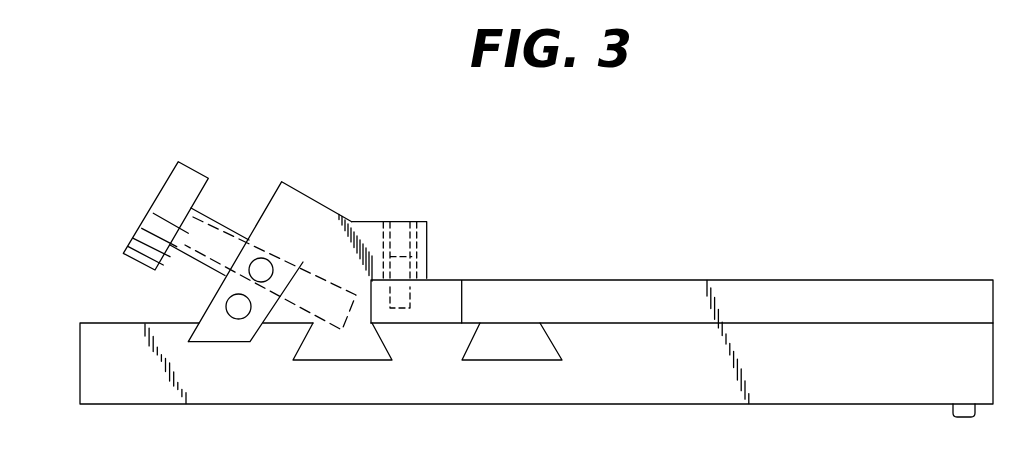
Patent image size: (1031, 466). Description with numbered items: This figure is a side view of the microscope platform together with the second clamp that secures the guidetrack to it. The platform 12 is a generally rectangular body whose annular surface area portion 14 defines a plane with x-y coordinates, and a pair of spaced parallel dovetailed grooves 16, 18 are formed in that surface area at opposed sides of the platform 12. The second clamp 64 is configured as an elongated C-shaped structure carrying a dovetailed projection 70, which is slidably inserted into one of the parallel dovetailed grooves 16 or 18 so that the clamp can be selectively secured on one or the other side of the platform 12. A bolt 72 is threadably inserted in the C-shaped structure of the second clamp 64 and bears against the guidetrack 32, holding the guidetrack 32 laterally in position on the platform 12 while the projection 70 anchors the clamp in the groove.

The platform 12 is at (76, 344).
The annular surface area portion 14 is at (138, 323).
The dovetailed groove 16 is at (517, 353).
The dovetailed groove 18 is at (357, 352).
The guidetrack 32 is at (763, 300).
The second clamp 64 is at (308, 197).
The dovetailed projection 70 is at (320, 342).
The bolt 72 is at (153, 199).